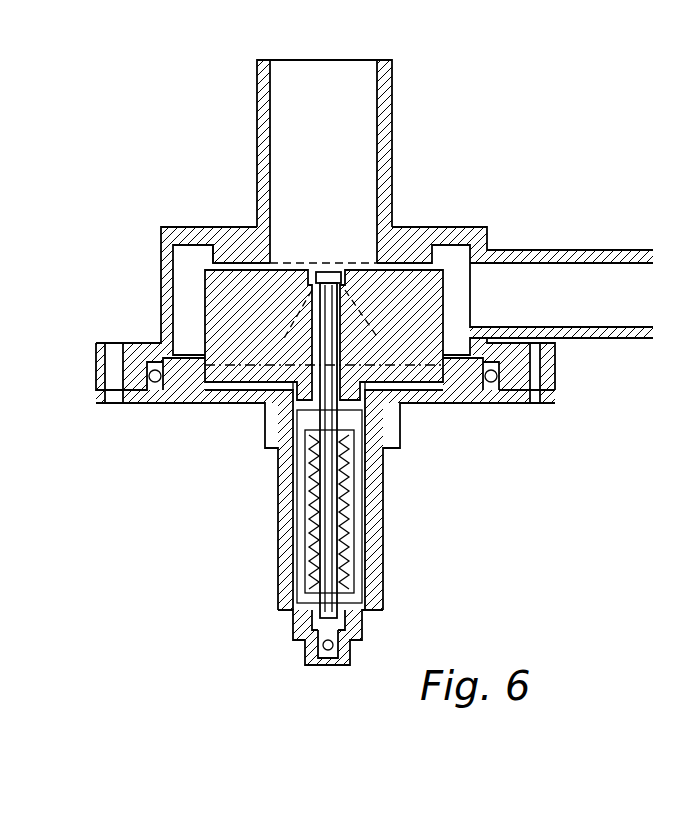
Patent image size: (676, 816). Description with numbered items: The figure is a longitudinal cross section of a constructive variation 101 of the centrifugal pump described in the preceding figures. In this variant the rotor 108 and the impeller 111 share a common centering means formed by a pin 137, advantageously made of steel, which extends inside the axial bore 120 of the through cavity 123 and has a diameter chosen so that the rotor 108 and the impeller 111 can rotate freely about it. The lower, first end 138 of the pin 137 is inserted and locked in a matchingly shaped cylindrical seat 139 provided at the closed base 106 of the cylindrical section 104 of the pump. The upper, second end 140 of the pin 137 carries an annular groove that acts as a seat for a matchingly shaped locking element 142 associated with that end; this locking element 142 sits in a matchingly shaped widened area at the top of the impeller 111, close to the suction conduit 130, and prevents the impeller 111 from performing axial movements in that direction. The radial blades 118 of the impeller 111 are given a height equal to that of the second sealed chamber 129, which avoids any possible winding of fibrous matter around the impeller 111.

The constructive variation of the centrifugal pump 101 is at (503, 125).
The suction conduit 130 is at (364, 167).
The impeller 111 is at (191, 289).
The second sealed chamber 129 is at (185, 315).
The radial blades 118 is at (430, 302).
The second end of the pin 140 is at (317, 317).
The locking element 142 is at (322, 264).
The pin 137 is at (341, 553).
The cylindrical section 104 is at (401, 486).
The axial bore 120 is at (268, 403).
The rotor 108 is at (310, 535).
The through cavity 123 is at (318, 497).
The closed base 106 is at (303, 662).
The cylindrical seat 139 is at (318, 620).
The first end of the pin 138 is at (334, 645).